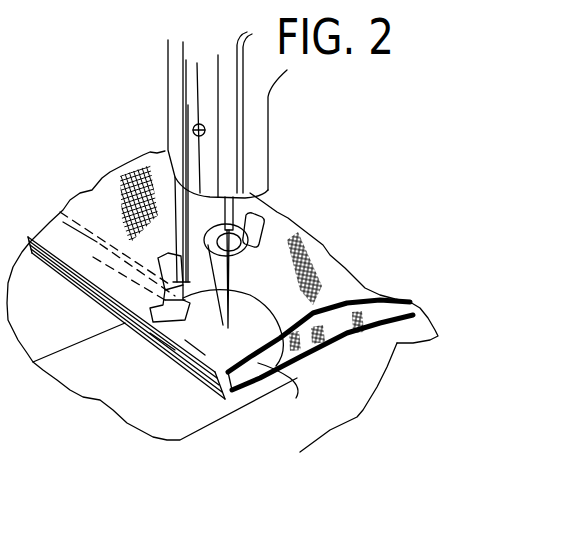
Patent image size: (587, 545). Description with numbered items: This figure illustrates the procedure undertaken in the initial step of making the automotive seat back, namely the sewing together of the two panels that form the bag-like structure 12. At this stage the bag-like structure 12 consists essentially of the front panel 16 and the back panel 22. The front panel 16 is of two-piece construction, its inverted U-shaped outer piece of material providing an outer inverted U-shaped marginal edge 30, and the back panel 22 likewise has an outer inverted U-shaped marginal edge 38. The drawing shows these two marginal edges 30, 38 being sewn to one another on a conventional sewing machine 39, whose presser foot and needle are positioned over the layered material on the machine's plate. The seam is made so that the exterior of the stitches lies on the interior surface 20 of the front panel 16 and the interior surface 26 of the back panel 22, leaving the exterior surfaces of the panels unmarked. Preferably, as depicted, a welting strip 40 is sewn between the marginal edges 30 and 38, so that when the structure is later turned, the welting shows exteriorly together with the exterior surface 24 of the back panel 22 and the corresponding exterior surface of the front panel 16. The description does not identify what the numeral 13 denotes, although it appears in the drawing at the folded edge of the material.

The bag-like structure 12 is at (95, 174).
The fabric edge 13 is at (333, 290).
The front panel 16 is at (353, 336).
The interior surface 20 is at (273, 236).
The back panel 22 is at (413, 341).
The exterior surface 24 is at (391, 331).
The interior surface 26 is at (370, 331).
The outer inverted U-shaped marginal edge 30 is at (217, 381).
The outer inverted U-shaped marginal edge 38 is at (243, 388).
The sewing machine 39 is at (257, 130).
The welting strip 40 is at (289, 394).